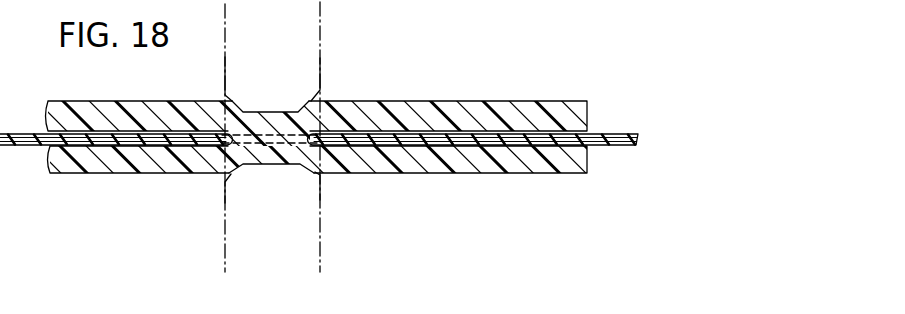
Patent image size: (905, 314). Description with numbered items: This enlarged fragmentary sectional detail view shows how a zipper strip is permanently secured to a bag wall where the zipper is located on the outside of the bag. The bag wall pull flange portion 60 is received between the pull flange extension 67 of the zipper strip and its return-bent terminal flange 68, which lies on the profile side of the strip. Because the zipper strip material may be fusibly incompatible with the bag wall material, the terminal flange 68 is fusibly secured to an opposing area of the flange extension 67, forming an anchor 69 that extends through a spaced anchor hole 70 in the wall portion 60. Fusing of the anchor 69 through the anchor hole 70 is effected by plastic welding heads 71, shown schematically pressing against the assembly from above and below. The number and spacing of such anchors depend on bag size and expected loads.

The confronting margins 60 is at (632, 139).
The pull flange extension 67 is at (583, 119).
The terminal flange 68 is at (532, 174).
The anchor 69 is at (285, 122).
The anchor hole 70 is at (330, 173).
The plastic welding head 71 is at (225, 58).